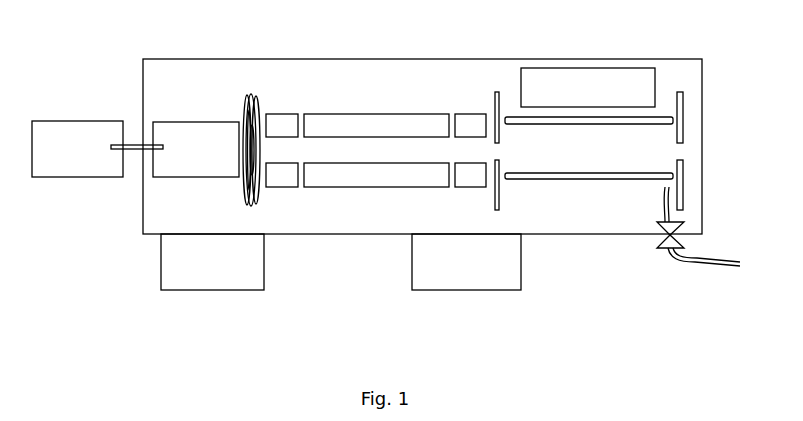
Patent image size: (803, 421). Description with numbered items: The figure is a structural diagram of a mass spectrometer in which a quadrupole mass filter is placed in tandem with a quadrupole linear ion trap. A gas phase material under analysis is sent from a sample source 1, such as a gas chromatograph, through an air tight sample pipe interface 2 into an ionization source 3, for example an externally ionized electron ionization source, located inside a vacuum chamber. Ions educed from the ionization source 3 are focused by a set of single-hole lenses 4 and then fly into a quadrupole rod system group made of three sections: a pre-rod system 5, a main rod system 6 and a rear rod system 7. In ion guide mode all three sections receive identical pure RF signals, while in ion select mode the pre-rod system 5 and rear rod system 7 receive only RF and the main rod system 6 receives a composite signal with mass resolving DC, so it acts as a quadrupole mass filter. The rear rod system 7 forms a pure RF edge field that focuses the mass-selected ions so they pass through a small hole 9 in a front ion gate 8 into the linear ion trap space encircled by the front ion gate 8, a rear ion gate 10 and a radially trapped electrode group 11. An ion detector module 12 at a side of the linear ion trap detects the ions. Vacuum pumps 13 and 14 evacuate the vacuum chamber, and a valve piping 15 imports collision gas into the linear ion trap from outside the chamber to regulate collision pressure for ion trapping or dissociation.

The sample source 1 is at (65, 121).
The air tight sample pipe interface 2 is at (135, 145).
The ionization source 3 is at (196, 122).
The set of single-hole lenses 4 is at (252, 95).
The pre-rod system 5 is at (290, 114).
The main rod system 6 is at (373, 114).
The rear rod system 7 is at (465, 114).
The front ion gate 8 is at (494, 190).
The small hole 9 is at (498, 150).
The rear ion gate 10 is at (683, 195).
The radially trapped electrode group 11 is at (582, 180).
The ion detector module 12 is at (590, 68).
The vacuum pump 13 is at (264, 254).
The vacuum pump 14 is at (521, 255).
The valve piping 15 is at (668, 250).